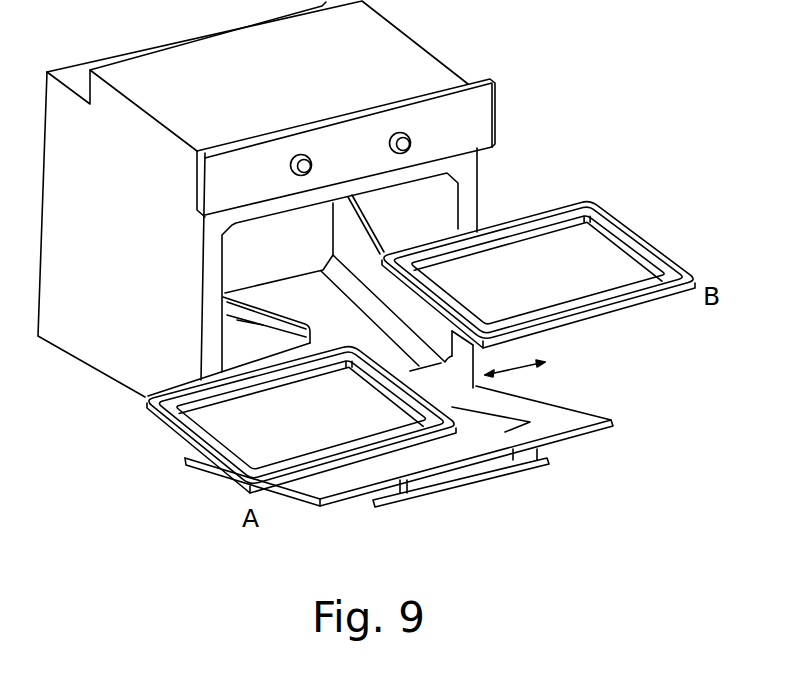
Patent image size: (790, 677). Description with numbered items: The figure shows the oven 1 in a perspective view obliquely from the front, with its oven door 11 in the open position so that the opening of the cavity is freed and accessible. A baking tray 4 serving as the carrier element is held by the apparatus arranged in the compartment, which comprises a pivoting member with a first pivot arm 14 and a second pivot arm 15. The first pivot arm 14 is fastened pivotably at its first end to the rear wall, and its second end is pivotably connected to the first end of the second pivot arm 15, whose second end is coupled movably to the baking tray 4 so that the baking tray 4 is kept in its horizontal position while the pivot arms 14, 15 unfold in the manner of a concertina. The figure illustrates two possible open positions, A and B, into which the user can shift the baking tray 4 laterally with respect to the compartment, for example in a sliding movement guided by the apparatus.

The oven 1 is at (68, 452).
The baking tray 4 is at (623, 273).
The oven door 11 is at (582, 433).
The first pivot arm 14 is at (230, 317).
The second pivot arm 15 is at (380, 252).